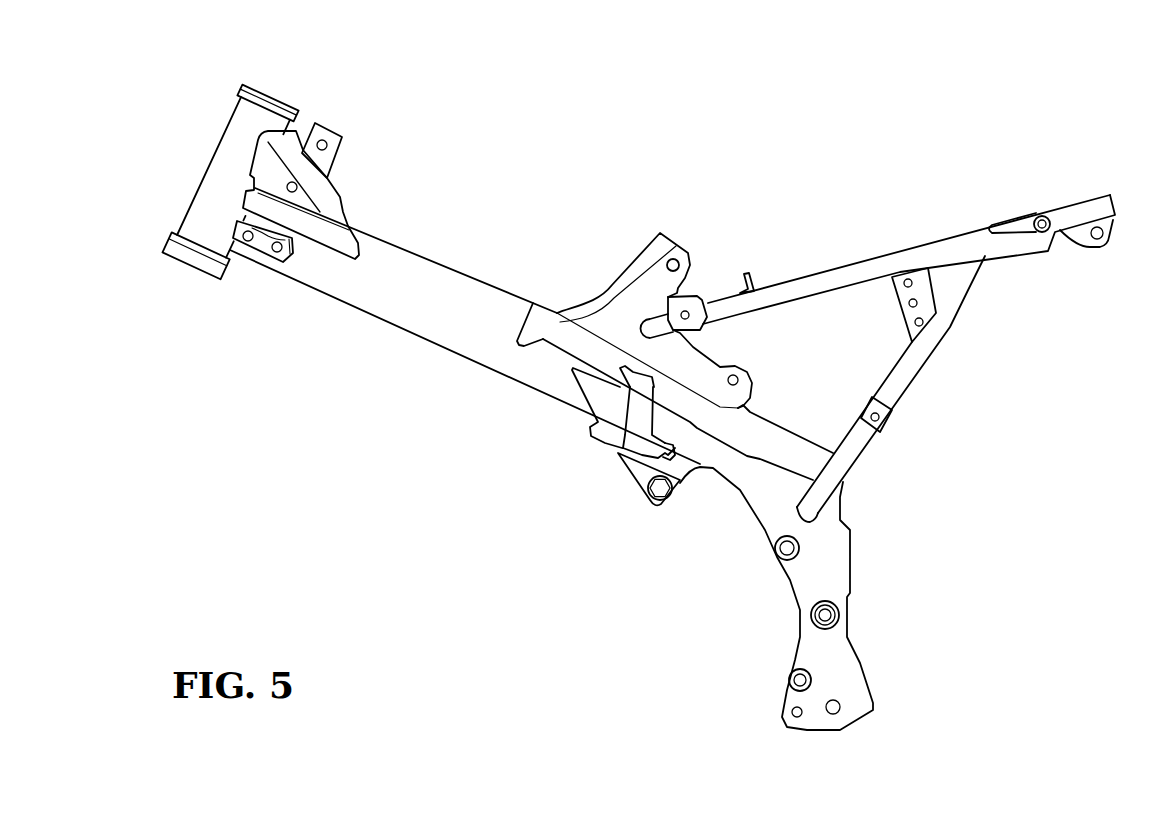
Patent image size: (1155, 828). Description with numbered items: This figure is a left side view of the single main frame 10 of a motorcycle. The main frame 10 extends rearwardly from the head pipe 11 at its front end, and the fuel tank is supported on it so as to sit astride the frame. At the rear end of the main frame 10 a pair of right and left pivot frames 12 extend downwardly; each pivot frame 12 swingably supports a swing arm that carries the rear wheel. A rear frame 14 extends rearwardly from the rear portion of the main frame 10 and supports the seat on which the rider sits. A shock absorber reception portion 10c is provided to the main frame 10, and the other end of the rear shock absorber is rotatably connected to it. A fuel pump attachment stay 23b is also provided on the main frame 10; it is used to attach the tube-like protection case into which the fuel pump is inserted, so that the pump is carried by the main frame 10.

The main frame 10 is at (439, 253).
The shock absorber reception portion 10c is at (677, 250).
The head pipe 11 is at (258, 122).
The pivot frame 12 is at (837, 653).
The rear frame 14 is at (852, 262).
The fuel pump attachment stay 23b is at (626, 370).